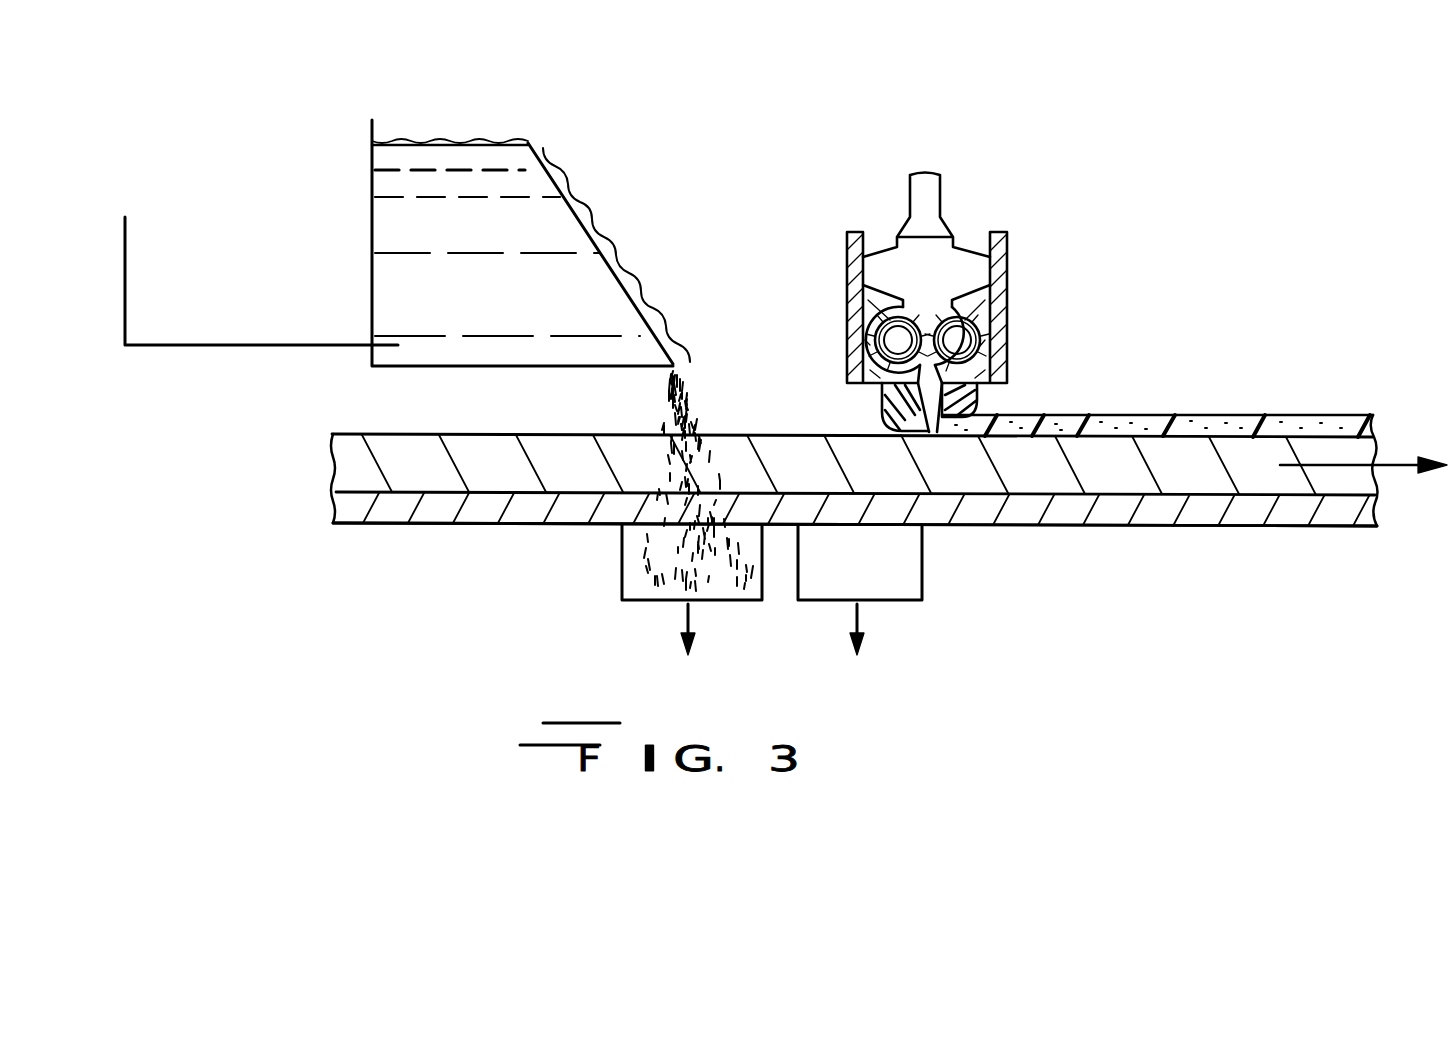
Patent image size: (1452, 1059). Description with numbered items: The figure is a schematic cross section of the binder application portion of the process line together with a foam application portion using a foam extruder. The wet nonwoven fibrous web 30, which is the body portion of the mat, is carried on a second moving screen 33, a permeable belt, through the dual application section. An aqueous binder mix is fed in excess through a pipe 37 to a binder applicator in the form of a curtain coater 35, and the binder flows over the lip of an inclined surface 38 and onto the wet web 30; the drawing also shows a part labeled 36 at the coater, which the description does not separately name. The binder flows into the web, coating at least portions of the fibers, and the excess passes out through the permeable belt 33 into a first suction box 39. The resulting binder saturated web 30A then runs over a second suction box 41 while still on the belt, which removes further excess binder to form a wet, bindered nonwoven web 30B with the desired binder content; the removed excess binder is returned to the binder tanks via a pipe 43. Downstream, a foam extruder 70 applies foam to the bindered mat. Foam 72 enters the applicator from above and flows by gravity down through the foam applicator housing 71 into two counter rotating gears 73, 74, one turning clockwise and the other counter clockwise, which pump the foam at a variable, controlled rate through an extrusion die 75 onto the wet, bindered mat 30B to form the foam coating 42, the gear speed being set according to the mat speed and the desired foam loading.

The wet nonwoven fibrous web 30 is at (392, 450).
The binder saturated web 30A is at (773, 457).
The wet, bindered nonwoven web 30B is at (928, 463).
The second moving screen 33 is at (392, 523).
The curtain coater 35 is at (384, 212).
The hopper / inclined plate 36 is at (588, 200).
The pipe 37 is at (128, 253).
The inclined surface 38 is at (606, 284).
The first suction box 39 is at (625, 567).
The second suction box 41 is at (828, 578).
The foam coating 42 is at (1243, 415).
The pipe 43 is at (680, 612).
The foam extruder 70 is at (939, 245).
The foam applicator housing 71 is at (850, 272).
The foam 72 is at (922, 160).
The gear 73 is at (1007, 270).
The gear 74 is at (990, 325).
The extrusion die 75 is at (975, 395).